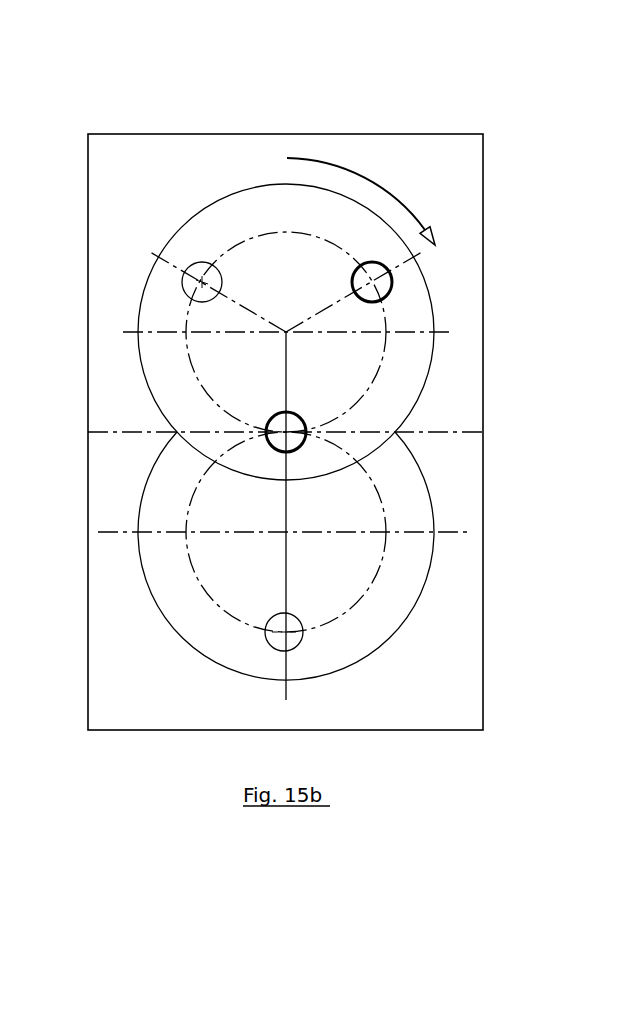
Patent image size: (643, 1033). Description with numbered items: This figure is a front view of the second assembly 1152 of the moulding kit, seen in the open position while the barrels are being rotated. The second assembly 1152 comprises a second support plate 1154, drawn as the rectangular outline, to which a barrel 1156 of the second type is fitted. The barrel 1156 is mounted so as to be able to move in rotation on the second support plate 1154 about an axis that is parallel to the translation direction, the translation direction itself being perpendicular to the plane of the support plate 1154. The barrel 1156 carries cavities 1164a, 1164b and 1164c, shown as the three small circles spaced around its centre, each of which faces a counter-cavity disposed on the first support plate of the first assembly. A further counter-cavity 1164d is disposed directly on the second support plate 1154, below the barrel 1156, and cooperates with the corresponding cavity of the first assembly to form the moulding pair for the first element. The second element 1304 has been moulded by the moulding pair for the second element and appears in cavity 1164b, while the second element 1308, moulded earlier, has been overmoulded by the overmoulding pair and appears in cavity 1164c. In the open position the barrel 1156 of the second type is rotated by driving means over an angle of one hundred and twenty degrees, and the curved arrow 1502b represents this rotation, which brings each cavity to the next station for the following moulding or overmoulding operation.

The second assembly 1152 is at (348, 82).
The second support plate 1154 is at (467, 680).
The barrel of the second type 1156 is at (415, 323).
The cavity 1164a is at (206, 262).
The cavity 1164b is at (415, 260).
The cavity 1164c is at (290, 453).
The counter-cavity 1164d is at (270, 646).
The second element 1304 is at (355, 270).
The second element 1308 is at (266, 434).
The arrow 1502b is at (376, 201).